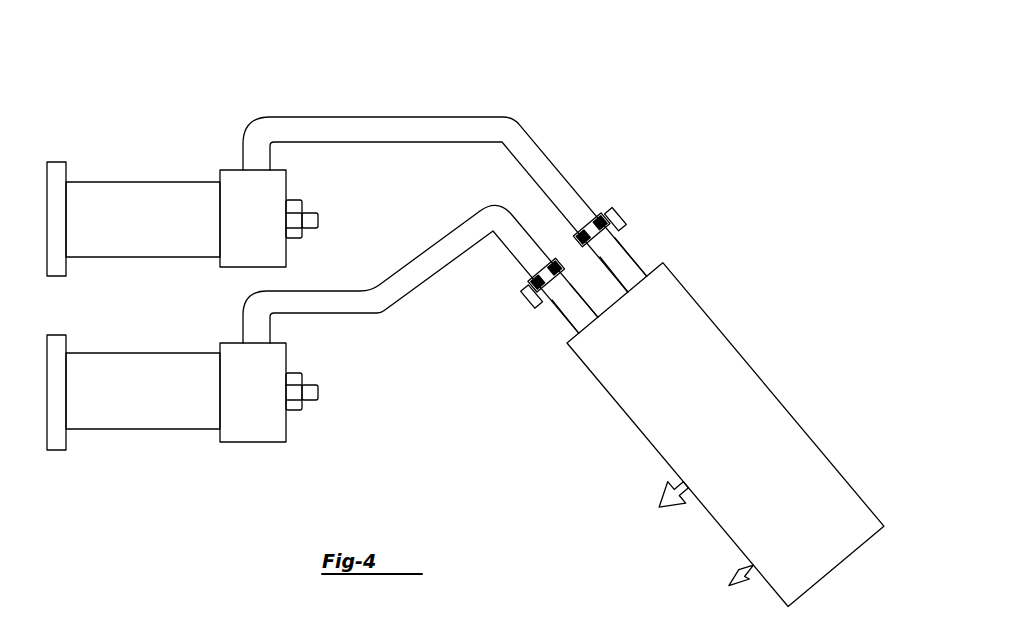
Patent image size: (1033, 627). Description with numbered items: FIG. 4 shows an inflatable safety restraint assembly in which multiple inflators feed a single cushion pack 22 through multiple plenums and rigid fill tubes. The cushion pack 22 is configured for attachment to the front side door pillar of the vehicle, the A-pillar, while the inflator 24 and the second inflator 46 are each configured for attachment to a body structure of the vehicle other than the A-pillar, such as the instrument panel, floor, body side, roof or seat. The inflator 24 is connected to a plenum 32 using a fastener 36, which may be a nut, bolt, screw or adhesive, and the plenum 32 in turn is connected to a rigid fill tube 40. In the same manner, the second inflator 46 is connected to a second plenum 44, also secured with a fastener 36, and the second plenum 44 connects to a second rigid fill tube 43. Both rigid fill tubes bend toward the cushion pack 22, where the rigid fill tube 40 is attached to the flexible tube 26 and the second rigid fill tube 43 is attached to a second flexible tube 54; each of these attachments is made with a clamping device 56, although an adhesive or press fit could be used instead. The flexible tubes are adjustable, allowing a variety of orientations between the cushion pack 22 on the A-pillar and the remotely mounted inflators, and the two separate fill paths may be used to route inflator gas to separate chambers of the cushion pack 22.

The cushion pack 22 is at (740, 383).
The inflator 24 is at (117, 422).
The flexible tube 26 is at (627, 255).
The plenum 32 is at (260, 430).
The fastener 36 is at (298, 217).
The rigid fill tube 40 is at (377, 303).
The second rigid fill tube 43 is at (340, 128).
The second plenum 44 is at (243, 262).
The second inflator 46 is at (146, 186).
The second flexible tube 54 is at (563, 317).
The clamping device 56 is at (613, 215).